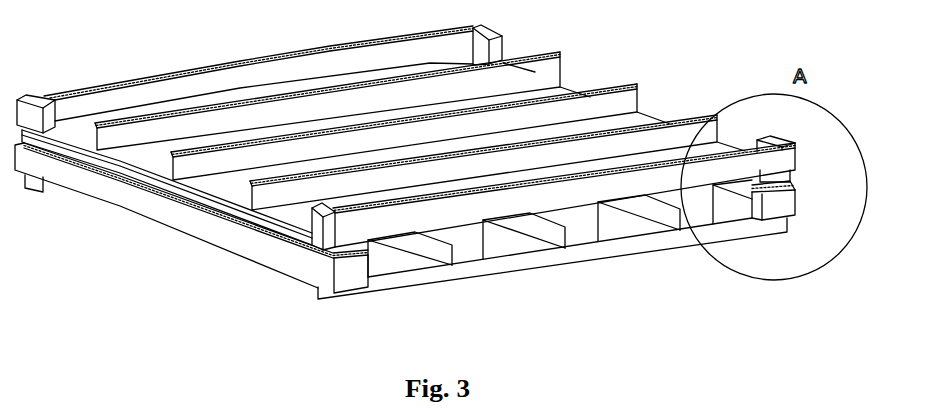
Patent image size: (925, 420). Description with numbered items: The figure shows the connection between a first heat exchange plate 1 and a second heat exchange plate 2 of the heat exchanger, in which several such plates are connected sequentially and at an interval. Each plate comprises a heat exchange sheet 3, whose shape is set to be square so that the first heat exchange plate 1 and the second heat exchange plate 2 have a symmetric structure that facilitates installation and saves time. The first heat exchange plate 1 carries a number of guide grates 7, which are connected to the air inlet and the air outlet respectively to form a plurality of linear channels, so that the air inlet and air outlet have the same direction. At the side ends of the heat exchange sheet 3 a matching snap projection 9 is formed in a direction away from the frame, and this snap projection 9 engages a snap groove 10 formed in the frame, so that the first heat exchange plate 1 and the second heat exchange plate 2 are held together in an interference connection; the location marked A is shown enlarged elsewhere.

The first heat exchange plate 1 is at (508, 60).
The second heat exchange plate 2 is at (510, 255).
The heat exchange sheet 3 is at (130, 160).
The guide grates 7 is at (200, 162).
The snap projection 9 is at (333, 249).
The snap groove 10 is at (334, 270).